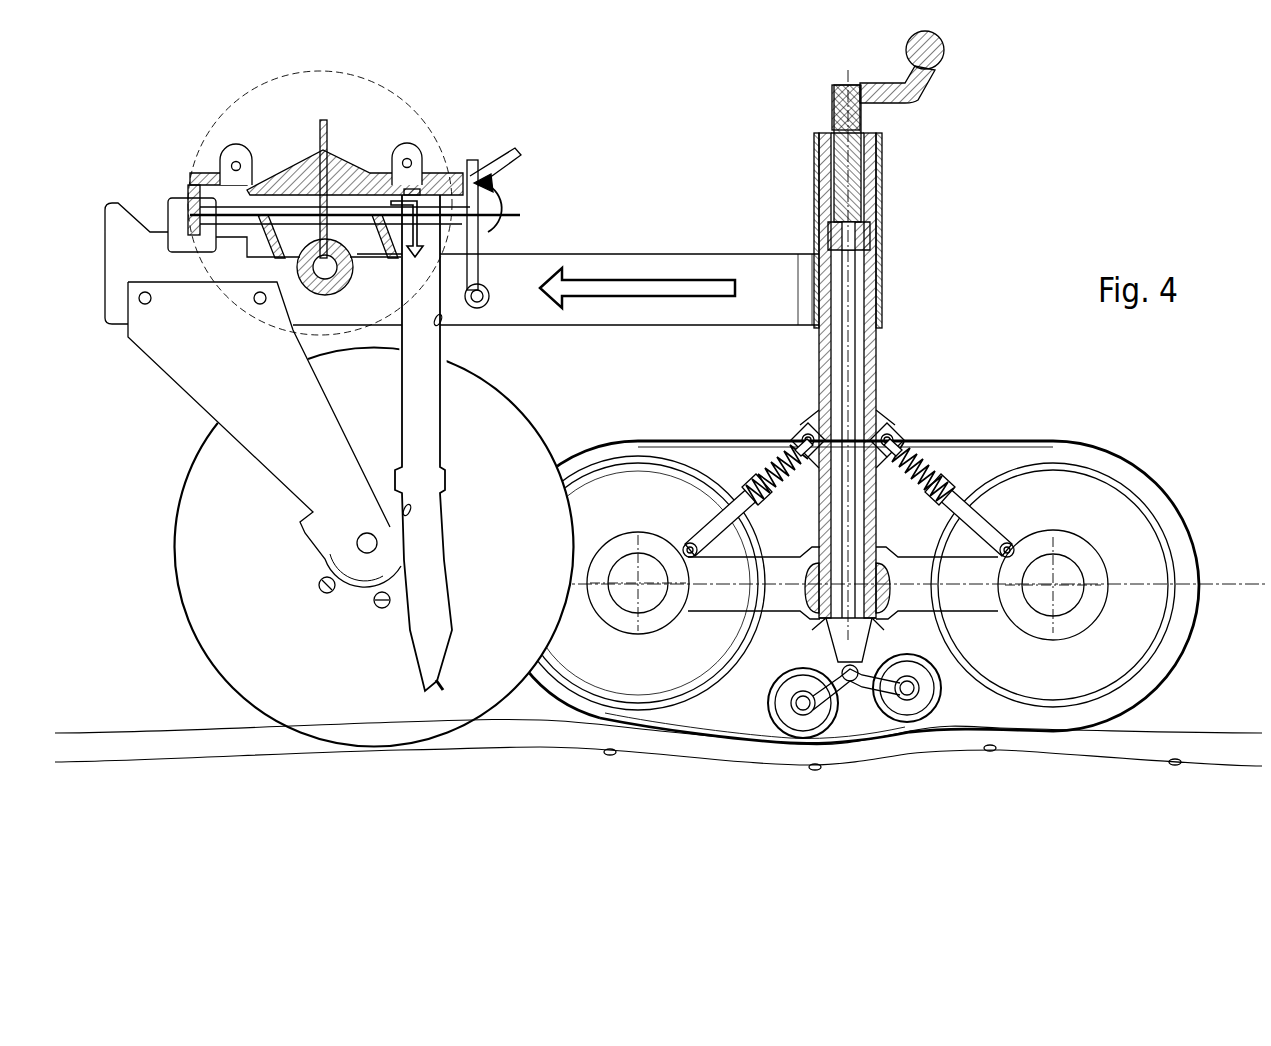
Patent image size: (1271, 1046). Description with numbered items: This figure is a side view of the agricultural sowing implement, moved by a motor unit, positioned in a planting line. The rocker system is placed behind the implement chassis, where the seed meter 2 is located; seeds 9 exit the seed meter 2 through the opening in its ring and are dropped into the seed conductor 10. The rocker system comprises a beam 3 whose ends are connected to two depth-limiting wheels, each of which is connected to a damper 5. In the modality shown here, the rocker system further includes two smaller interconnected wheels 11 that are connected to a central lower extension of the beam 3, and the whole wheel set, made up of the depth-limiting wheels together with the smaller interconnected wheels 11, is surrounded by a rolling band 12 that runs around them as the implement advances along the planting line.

The seed meter 2 is at (292, 170).
The beam 3 is at (925, 570).
The damper 5 is at (743, 497).
The seeds 9 is at (411, 192).
The seed conductor 10 is at (441, 345).
The smaller interconnected wheels 11 is at (915, 722).
The rolling band 12 is at (945, 433).